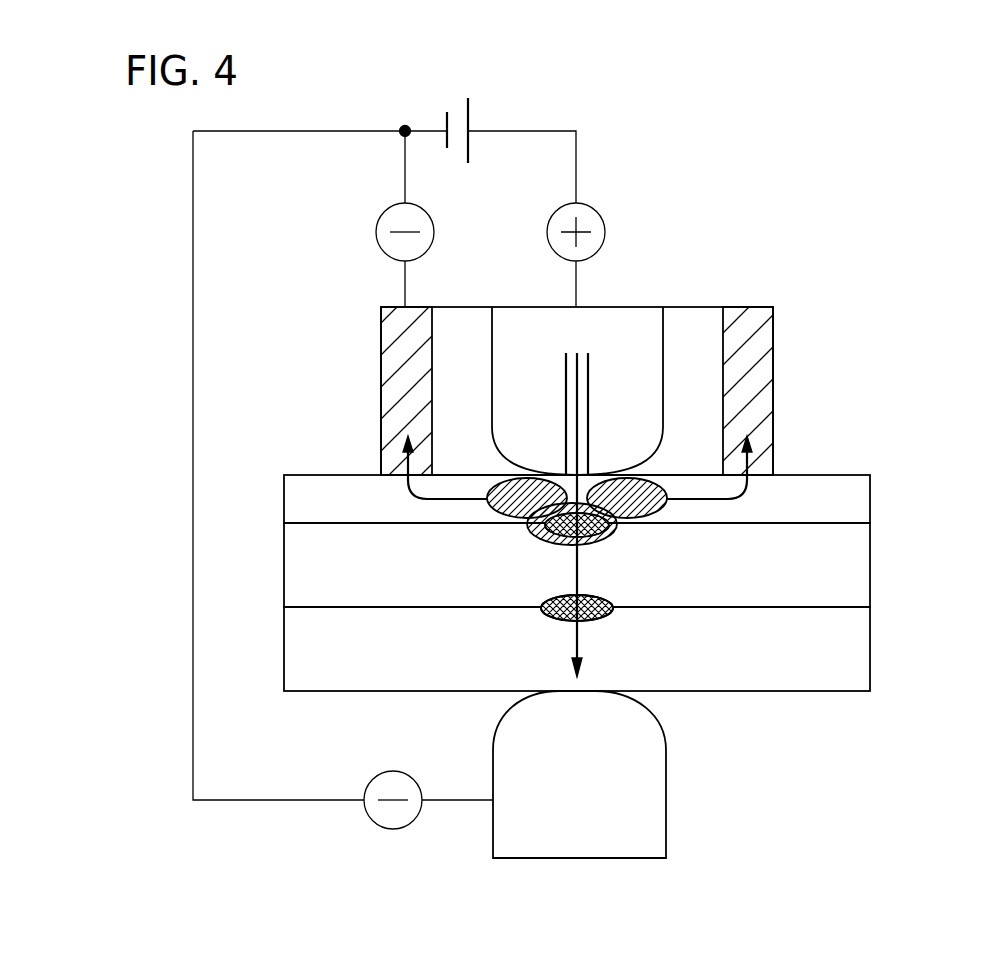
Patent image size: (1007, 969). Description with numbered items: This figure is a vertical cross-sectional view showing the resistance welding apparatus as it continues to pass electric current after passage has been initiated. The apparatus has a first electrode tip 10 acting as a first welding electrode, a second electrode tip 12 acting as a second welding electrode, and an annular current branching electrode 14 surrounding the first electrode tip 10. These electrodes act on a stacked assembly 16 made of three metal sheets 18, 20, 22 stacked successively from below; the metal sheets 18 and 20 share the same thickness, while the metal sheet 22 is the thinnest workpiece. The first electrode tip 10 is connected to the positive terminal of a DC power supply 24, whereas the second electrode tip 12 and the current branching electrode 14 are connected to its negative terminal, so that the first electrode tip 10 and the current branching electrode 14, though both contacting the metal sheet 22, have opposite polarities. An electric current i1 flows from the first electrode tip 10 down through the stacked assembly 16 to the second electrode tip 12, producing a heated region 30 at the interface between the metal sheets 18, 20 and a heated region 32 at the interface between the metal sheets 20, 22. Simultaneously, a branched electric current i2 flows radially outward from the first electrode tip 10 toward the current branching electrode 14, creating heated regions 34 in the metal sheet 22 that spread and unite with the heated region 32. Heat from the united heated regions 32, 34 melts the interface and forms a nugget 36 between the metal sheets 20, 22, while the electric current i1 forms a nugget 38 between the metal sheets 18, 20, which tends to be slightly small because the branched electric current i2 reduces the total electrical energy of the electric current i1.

The first electrode tip 10 is at (647, 316).
The second electrode tip 12 is at (652, 798).
The current branching electrode 14 is at (763, 372).
The stacked assembly 16 is at (642, 583).
The metal sheet 18 is at (611, 649).
The metal sheet 20 is at (862, 566).
The metal sheet 22 is at (862, 495).
The DC power supply 24 is at (468, 116).
The heated region 30 is at (613, 618).
The heated region 32 is at (615, 538).
The heated region 34 is at (640, 508).
The nugget 36 is at (563, 543).
The nugget 38 is at (557, 622).
The electric current i1 is at (575, 651).
The branched electric current i2 is at (742, 500).